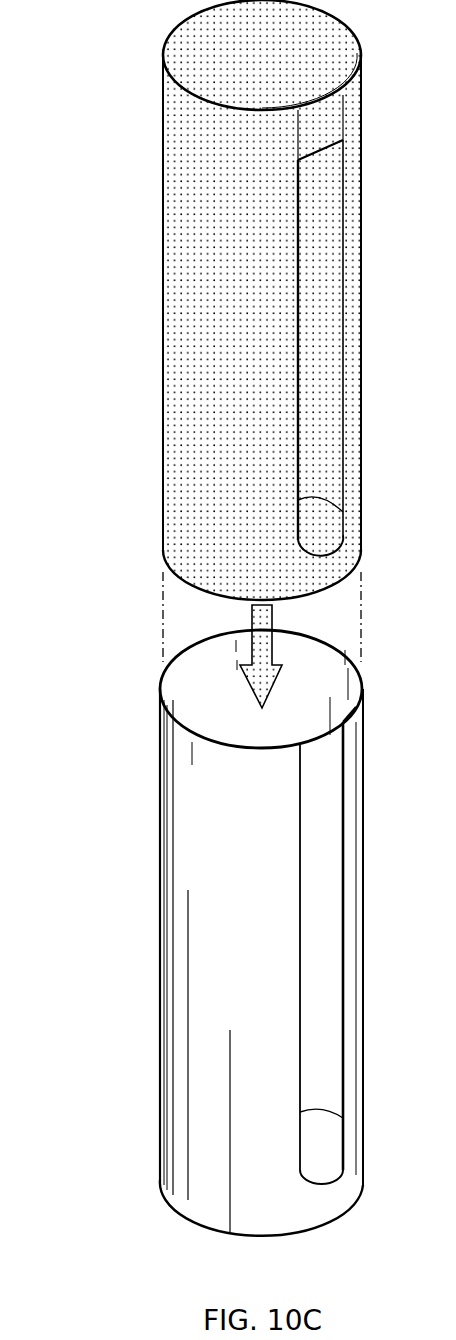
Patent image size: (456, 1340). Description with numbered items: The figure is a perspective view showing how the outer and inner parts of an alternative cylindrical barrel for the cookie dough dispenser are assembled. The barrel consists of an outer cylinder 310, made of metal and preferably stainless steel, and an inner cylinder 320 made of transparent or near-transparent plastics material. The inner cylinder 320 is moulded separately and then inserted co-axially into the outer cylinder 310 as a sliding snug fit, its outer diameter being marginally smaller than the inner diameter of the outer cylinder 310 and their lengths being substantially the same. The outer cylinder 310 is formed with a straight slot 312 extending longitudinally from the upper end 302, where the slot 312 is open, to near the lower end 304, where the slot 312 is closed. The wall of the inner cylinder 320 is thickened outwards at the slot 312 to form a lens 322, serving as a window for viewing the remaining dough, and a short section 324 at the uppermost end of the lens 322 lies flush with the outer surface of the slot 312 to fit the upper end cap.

The inner cylinder 320 is at (160, 170).
The lens 322 is at (330, 330).
The short section 324 is at (320, 118).
The outer cylinder 310 is at (157, 860).
The slot 312 is at (335, 897).
The upper end 302 is at (358, 748).
The lower end 304 is at (340, 1200).